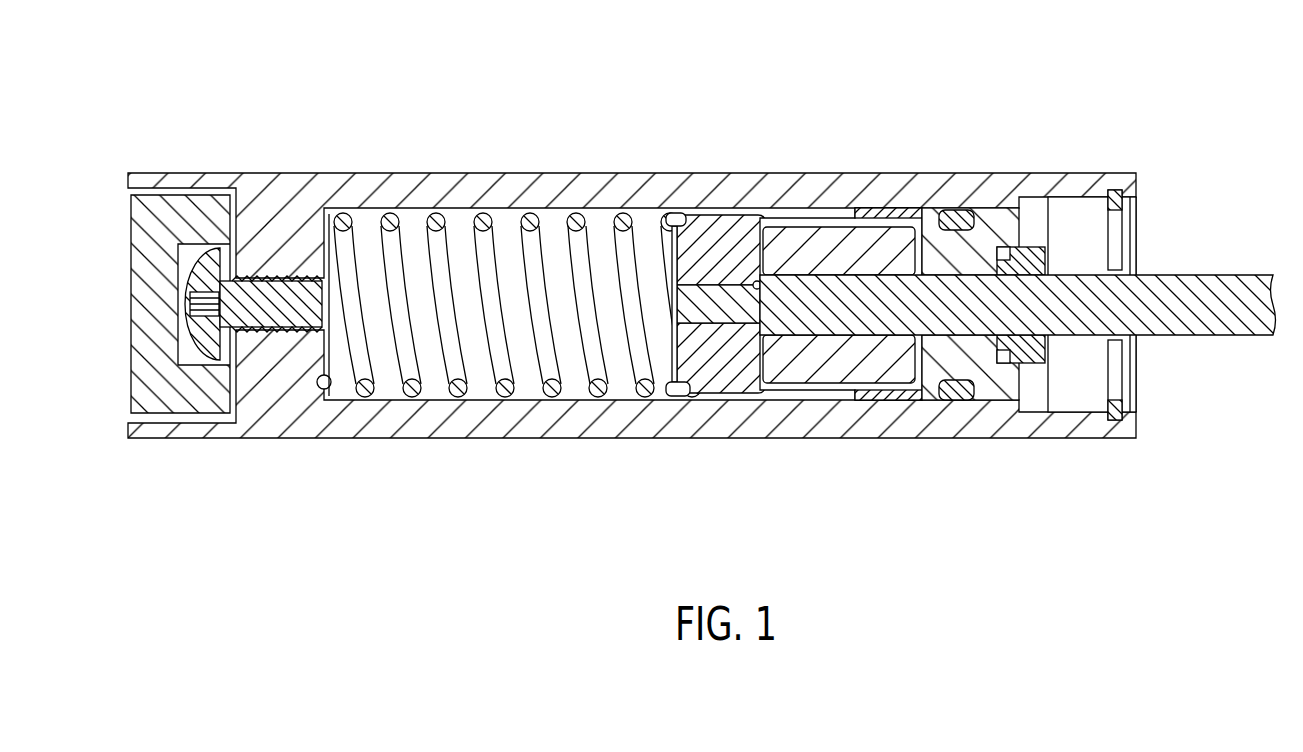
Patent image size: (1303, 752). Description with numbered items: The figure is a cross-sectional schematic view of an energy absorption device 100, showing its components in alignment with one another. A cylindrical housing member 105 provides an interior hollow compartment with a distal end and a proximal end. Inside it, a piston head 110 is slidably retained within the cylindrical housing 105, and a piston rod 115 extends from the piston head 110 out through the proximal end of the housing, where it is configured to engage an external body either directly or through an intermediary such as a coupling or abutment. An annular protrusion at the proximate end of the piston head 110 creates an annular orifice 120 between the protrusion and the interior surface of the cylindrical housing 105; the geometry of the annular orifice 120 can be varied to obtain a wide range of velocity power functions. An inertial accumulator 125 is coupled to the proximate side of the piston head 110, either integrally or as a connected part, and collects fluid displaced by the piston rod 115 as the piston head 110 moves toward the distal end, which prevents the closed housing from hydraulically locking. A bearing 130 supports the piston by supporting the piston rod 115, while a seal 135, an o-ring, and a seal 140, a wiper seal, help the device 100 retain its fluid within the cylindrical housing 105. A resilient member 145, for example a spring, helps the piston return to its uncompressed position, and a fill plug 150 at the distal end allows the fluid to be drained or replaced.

The energy absorption device 100 is at (1176, 125).
The cylindrical housing member 105 is at (502, 423).
The piston head 110 is at (705, 250).
The piston rod 115 is at (1197, 318).
The annular orifice 120 is at (853, 213).
The inertial accumulator 125 is at (812, 368).
The bearing 130 is at (1027, 385).
The seal 135 is at (953, 390).
The seal 140 is at (1028, 250).
The resilient member 145 is at (403, 358).
The fill plug 150 is at (275, 276).